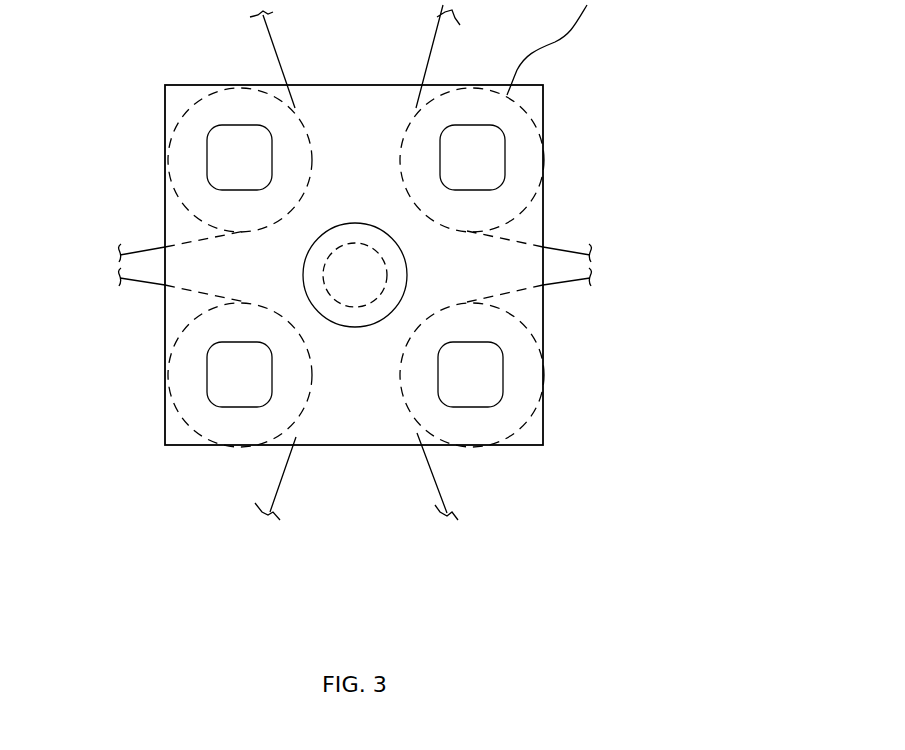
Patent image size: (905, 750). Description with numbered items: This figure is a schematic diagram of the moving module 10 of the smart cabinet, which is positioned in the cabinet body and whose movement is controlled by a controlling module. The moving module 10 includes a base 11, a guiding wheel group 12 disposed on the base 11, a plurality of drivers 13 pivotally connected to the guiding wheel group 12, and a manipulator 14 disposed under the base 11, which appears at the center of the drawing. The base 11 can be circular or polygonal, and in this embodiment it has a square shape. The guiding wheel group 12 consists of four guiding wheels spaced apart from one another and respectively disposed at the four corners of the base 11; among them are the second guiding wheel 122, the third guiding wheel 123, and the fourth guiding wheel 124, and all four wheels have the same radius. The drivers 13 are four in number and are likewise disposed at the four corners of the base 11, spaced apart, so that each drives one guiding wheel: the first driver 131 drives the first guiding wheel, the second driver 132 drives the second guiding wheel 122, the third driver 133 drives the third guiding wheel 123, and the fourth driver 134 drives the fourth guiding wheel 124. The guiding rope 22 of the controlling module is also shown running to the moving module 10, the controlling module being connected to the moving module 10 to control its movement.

The moving module 10 is at (535, 620).
The base 11 is at (345, 447).
The guiding wheel group 12 is at (171, 435).
The drivers 13 is at (184, 383).
The manipulator 14 is at (353, 243).
The guiding rope 22 is at (275, 50).
The second guiding wheel 122 is at (523, 323).
The third guiding wheel 123 is at (188, 325).
The fourth guiding wheel 124 is at (188, 210).
The first driver 131 is at (488, 152).
The second driver 132 is at (480, 385).
The third driver 133 is at (238, 385).
The fourth driver 134 is at (222, 162).